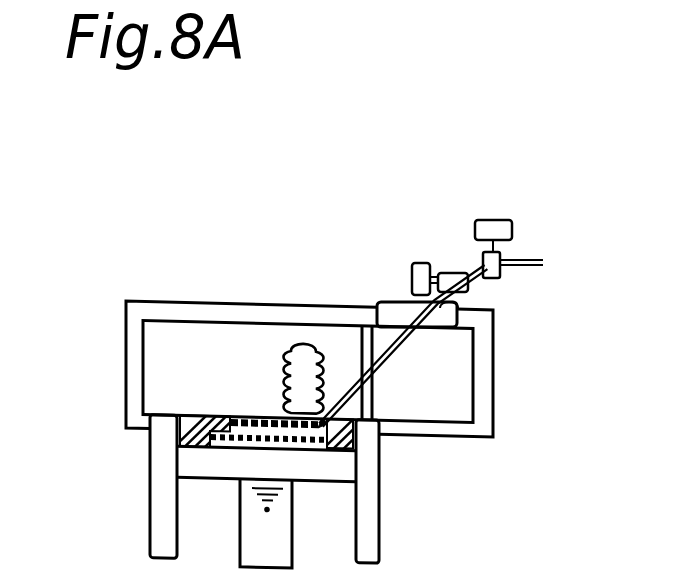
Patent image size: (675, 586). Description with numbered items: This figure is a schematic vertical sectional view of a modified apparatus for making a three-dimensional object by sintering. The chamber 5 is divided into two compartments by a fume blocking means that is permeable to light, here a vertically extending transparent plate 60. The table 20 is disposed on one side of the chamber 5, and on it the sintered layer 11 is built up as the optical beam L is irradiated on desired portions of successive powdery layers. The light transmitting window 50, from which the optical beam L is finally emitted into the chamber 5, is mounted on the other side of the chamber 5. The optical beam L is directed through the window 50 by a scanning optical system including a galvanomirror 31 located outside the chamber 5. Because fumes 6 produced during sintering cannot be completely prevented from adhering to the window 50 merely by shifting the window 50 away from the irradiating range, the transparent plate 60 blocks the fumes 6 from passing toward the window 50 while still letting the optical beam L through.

The chamber 5 is at (455, 347).
The fumes 6 is at (283, 376).
The sintered layer 11 is at (227, 418).
The table 20 is at (343, 455).
The galvanomirror 31 is at (425, 263).
The light transmitting window 50 is at (397, 304).
The transparent plate 60 is at (355, 328).
The optical beam L is at (449, 324).